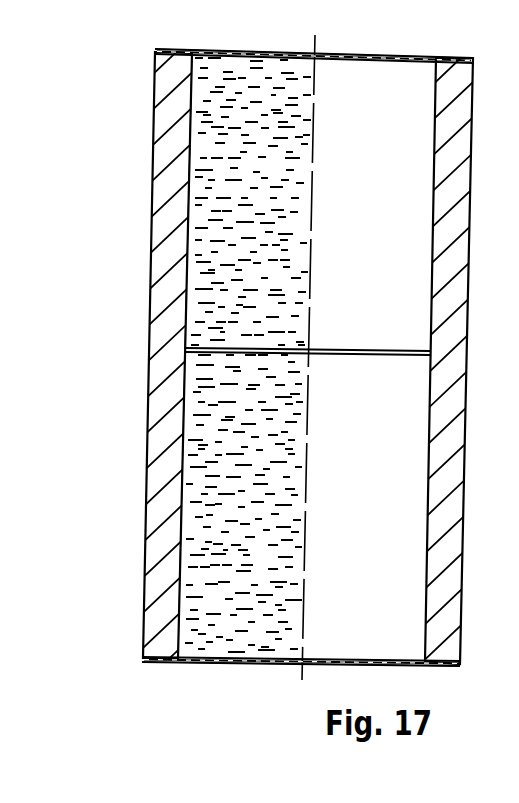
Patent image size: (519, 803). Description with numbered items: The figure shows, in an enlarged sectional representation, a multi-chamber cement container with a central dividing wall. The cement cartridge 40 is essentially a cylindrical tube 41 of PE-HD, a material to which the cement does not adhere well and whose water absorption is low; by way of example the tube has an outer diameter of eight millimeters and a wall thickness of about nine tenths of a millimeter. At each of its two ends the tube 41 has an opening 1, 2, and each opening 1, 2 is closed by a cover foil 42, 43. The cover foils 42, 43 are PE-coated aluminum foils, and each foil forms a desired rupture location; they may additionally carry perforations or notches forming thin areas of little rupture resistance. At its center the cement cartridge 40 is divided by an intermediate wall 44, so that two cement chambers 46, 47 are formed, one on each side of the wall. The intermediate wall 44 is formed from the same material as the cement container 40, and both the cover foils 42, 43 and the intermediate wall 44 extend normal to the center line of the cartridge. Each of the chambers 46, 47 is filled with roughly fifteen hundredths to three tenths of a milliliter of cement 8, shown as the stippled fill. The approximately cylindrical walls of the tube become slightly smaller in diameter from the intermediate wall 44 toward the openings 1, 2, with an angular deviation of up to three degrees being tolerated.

The opening 1 is at (269, 45).
The opening 2 is at (250, 667).
The cement 8 is at (215, 143).
The cement cartridge 40 is at (146, 321).
The cylindrical tube 41 is at (167, 262).
The cover foil 42 is at (203, 56).
The cover foil 43 is at (228, 657).
The intermediate wall 44 is at (237, 350).
The cement chamber 46 is at (198, 205).
The cement chamber 47 is at (196, 439).